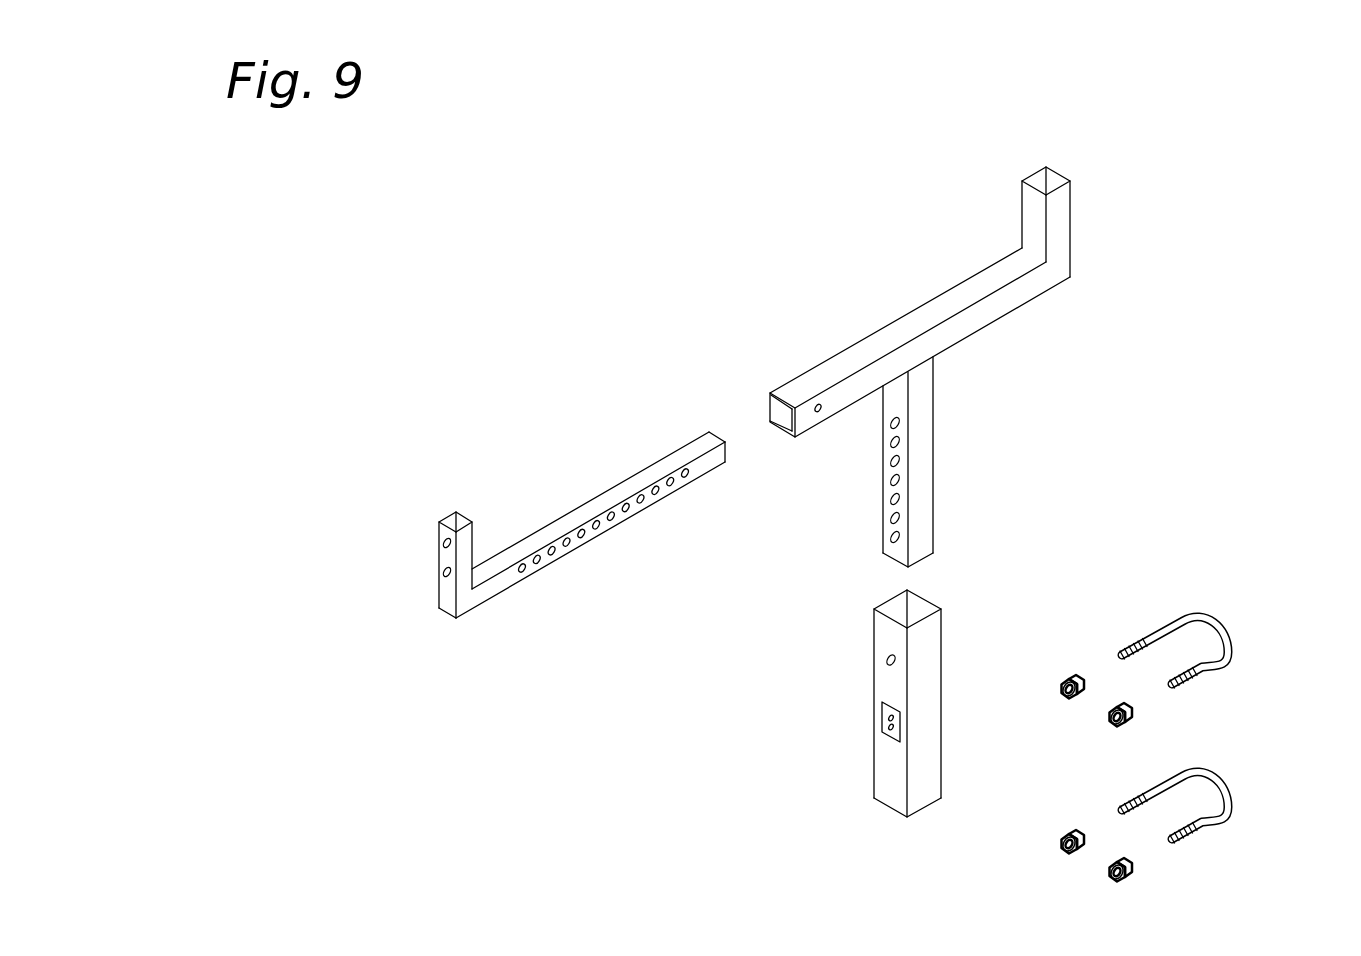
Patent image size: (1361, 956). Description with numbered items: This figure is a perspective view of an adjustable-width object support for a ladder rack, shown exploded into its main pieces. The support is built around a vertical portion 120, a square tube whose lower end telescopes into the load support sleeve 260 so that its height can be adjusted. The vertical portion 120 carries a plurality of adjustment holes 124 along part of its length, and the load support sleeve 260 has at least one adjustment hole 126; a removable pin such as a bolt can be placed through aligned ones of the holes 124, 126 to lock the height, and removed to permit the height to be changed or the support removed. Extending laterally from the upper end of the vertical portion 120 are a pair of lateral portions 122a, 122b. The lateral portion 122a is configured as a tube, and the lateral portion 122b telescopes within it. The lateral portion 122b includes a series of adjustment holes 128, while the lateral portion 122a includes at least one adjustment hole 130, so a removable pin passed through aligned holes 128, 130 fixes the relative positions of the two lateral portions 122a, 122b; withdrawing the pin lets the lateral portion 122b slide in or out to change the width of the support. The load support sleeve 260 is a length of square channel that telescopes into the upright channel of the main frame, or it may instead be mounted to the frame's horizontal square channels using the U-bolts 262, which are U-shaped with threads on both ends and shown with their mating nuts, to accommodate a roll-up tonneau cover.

The vertical portion 120 is at (914, 367).
The lateral portion 122a is at (914, 322).
The lateral portion 122b is at (582, 525).
The adjustment holes 124 is at (892, 502).
The adjustment hole 126 is at (885, 665).
The adjustment holes 128 is at (557, 552).
The adjustment hole 130 is at (825, 413).
The load support sleeve 260 is at (916, 703).
The U-bolts 262 is at (1212, 633).